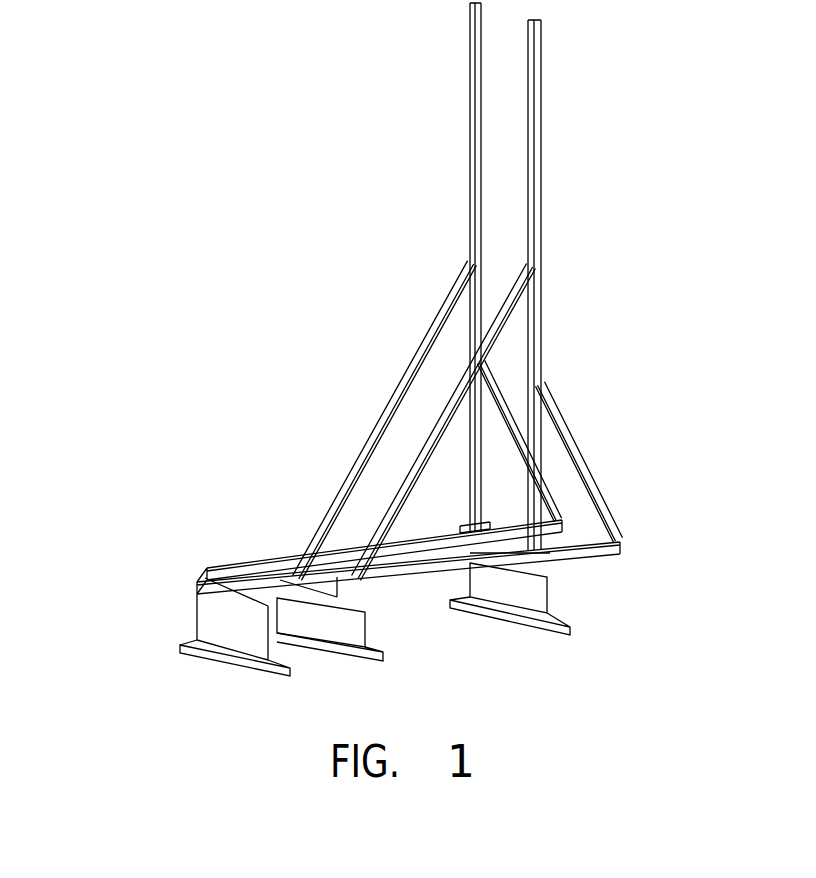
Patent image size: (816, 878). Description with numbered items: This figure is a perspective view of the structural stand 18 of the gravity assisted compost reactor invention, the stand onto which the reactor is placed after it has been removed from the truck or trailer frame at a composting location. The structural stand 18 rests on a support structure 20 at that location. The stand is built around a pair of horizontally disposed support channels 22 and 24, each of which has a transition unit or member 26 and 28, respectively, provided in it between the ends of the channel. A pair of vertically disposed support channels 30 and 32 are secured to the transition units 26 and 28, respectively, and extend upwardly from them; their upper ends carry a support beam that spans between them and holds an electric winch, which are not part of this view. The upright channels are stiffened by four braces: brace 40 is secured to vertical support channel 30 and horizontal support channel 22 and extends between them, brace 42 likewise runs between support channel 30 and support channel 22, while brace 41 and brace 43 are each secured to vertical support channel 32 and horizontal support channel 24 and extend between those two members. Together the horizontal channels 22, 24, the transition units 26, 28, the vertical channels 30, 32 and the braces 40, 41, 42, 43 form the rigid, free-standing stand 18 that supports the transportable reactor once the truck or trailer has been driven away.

The structural stand 18 is at (580, 207).
The support structure 20 is at (188, 619).
The horizontally disposed support channel 22 is at (425, 585).
The horizontally disposed support channel 24 is at (250, 566).
The transition unit 26 is at (556, 566).
The transition unit 28 is at (476, 522).
The vertically disposed support channel 30 is at (544, 110).
The vertically disposed support channel 32 is at (470, 107).
The brace 40 is at (587, 462).
The brace 41 is at (510, 412).
The brace 42 is at (437, 422).
The brace 43 is at (404, 362).